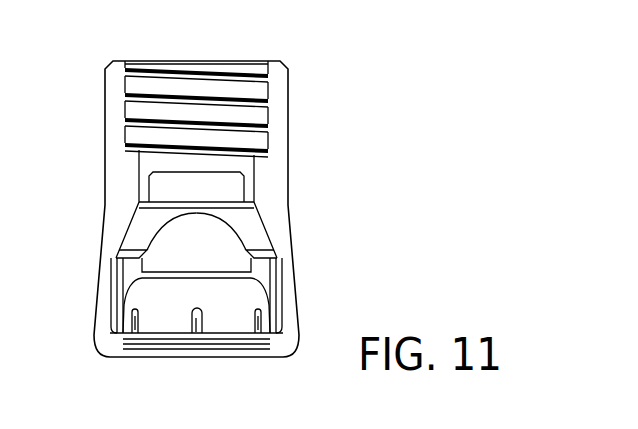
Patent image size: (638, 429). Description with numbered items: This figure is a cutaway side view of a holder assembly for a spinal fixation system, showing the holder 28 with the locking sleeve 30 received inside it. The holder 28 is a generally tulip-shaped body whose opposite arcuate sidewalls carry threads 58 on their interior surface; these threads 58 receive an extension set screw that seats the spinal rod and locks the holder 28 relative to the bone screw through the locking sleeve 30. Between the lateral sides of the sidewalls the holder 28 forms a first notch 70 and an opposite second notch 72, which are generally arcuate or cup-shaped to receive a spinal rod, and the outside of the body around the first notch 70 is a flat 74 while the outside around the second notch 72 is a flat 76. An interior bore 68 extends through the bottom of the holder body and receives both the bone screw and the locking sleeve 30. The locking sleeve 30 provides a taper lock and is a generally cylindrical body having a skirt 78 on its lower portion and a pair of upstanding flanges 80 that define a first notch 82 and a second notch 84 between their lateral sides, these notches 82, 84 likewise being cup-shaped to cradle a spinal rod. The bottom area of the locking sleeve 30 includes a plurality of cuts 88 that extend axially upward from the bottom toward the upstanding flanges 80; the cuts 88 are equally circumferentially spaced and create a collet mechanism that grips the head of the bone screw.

The holder 28 is at (288, 117).
The threads 58 is at (207, 72).
The locking sleeve 30 is at (242, 233).
The upstanding flanges 80 is at (148, 230).
The second notch 84 is at (137, 253).
The first notch 82 is at (258, 251).
The second notch 72 is at (103, 253).
The first notch 70 is at (285, 258).
The flat 76 is at (93, 295).
The flat 74 is at (300, 297).
The skirt 78 is at (233, 313).
The cuts 88 is at (197, 319).
The interior bore 68 is at (158, 357).